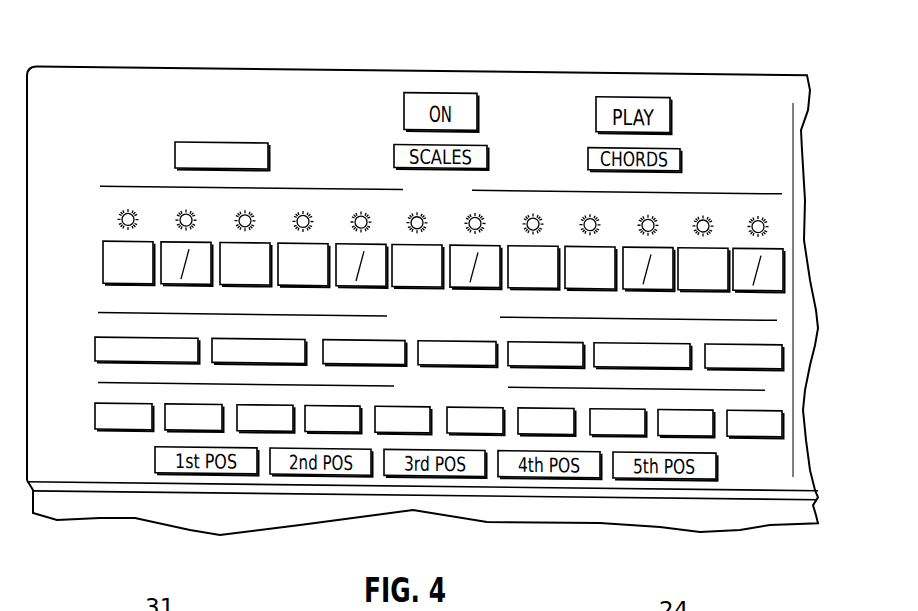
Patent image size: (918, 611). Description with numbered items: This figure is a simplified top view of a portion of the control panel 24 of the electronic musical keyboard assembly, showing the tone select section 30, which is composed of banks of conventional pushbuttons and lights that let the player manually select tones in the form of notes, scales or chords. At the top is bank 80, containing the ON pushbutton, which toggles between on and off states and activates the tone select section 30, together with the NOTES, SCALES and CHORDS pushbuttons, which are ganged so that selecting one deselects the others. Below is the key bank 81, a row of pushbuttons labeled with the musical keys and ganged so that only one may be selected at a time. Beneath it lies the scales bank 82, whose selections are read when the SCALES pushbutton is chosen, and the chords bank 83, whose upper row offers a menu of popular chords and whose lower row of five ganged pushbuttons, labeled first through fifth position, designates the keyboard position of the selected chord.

The tone select section 30 is at (361, 129).
The control panel 24 is at (72, 330).
The bank 80 is at (152, 147).
The key bank 81 is at (96, 252).
The scales bank 82 is at (86, 372).
The chords bank 83 is at (124, 443).